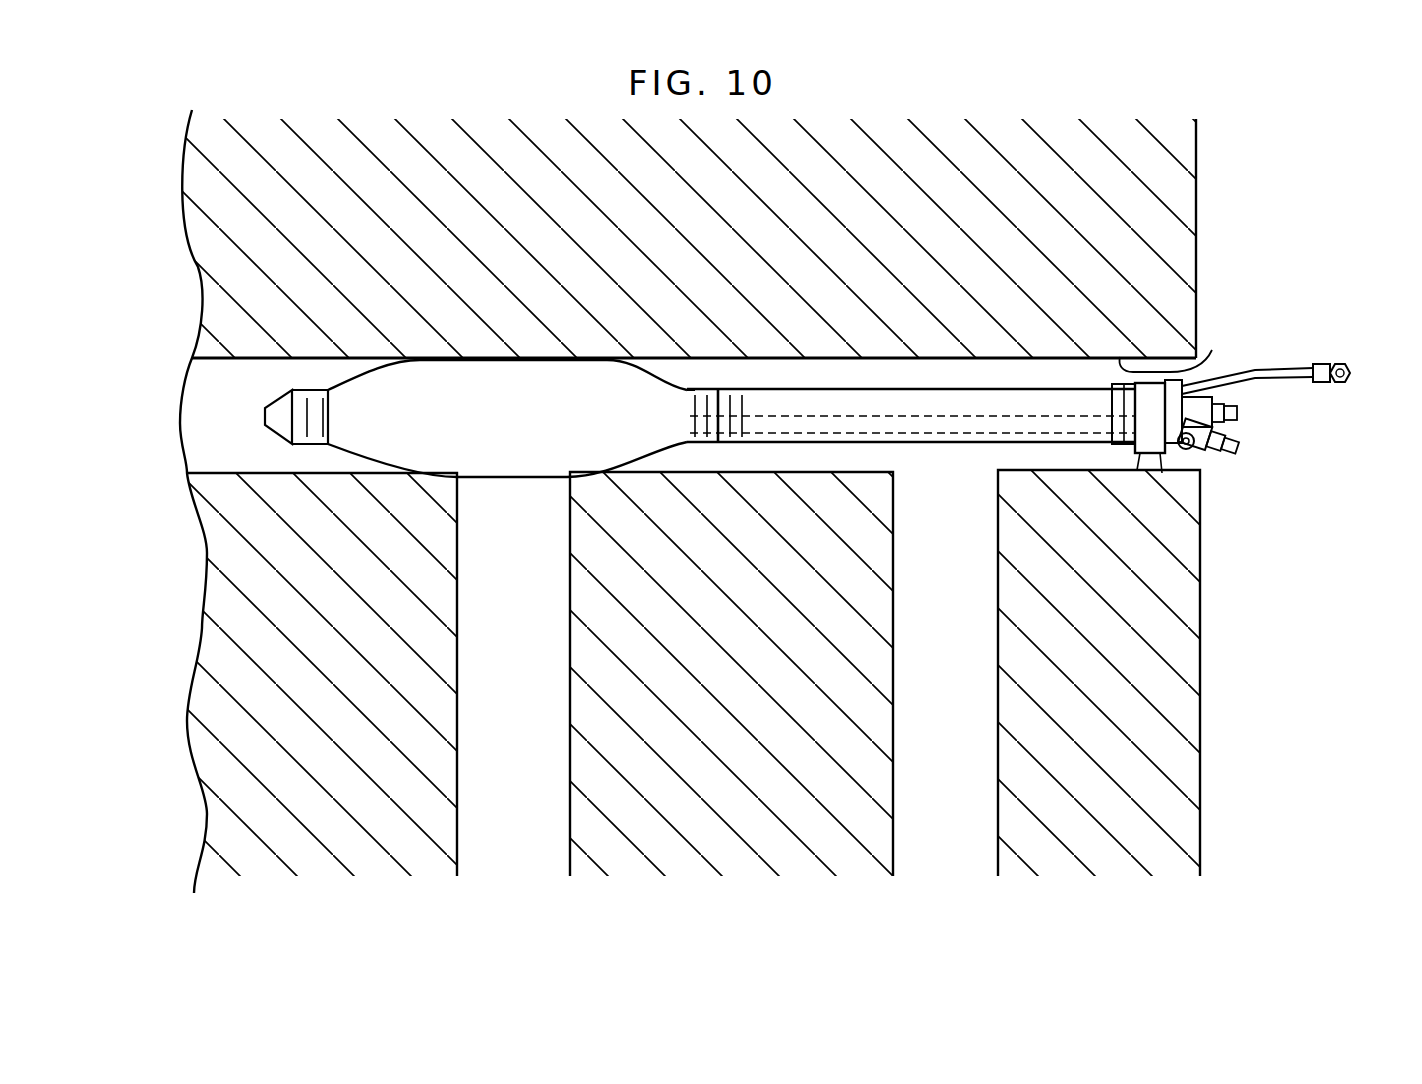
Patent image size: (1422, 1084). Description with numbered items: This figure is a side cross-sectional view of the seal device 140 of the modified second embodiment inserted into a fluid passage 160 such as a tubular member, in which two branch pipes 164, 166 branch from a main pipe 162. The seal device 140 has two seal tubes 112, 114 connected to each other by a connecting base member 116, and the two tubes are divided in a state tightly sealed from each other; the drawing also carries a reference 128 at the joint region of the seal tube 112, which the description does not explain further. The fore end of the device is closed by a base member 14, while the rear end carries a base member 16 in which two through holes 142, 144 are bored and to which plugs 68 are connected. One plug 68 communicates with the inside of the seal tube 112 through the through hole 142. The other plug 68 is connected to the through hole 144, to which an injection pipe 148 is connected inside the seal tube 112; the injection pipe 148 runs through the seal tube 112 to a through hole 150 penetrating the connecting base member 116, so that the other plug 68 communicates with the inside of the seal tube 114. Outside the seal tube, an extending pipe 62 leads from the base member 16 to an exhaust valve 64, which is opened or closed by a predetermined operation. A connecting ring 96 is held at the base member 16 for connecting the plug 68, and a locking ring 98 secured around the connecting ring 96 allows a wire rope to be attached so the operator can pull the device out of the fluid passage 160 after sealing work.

The base member 14 is at (280, 437).
The base member 16 is at (1160, 474).
The extending pipe 62 is at (1293, 367).
The exhaust valve 64 is at (1350, 377).
The plug 68 is at (1240, 413).
The connecting ring 96 is at (1237, 408).
The locking ring 98 is at (1197, 472).
The seal tube 112 is at (882, 392).
The seal tube 114 is at (357, 460).
The connecting base member 116 is at (713, 445).
The balloon proximal neck 128 is at (712, 383).
The seal device 140 is at (770, 417).
The through hole 142 is at (1110, 383).
The through hole 144 is at (1138, 462).
The injection pipe 148 is at (935, 435).
The through hole 150 is at (692, 418).
The fluid passage 160 is at (215, 398).
The main pipe 162 is at (1212, 350).
The branch pipe 164 is at (459, 798).
The branch pipe 166 is at (999, 811).